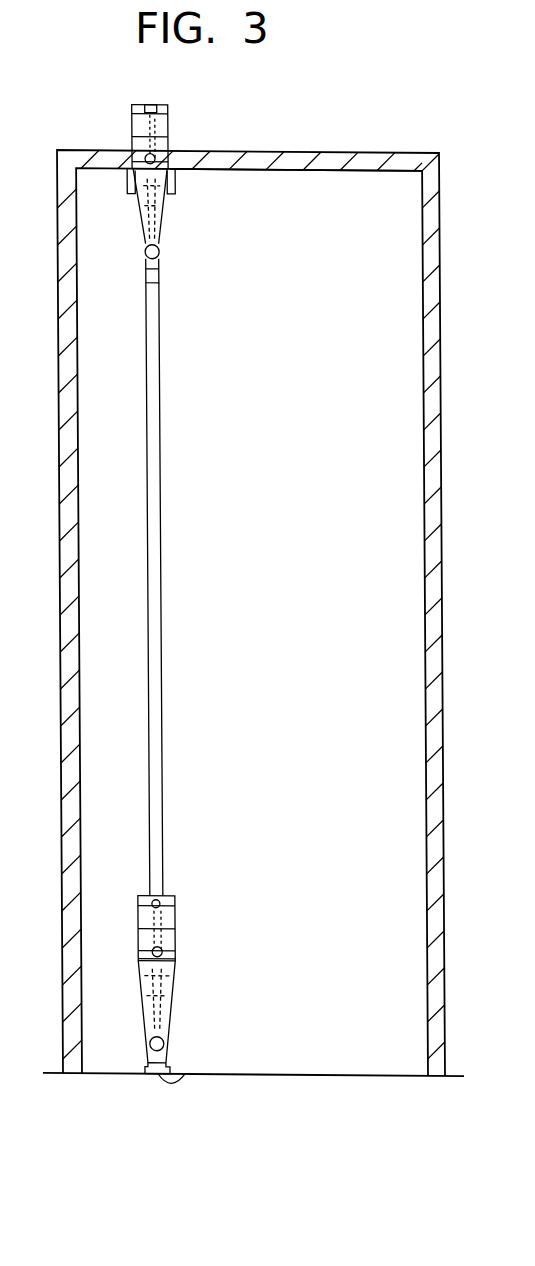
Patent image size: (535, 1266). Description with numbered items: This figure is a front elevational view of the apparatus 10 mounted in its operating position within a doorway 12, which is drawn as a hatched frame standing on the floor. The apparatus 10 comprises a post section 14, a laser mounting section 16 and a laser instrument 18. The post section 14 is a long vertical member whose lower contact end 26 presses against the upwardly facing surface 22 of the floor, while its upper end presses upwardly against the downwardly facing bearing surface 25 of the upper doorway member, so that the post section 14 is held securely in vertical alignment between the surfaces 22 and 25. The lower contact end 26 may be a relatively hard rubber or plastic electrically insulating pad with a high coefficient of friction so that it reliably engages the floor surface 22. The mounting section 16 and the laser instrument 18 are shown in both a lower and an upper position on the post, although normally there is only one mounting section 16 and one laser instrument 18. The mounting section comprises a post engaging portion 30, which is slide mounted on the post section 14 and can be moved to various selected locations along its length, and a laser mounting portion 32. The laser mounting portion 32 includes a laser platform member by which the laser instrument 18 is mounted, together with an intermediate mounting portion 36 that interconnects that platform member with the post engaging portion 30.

The apparatus 10 is at (198, 591).
The doorway 12 is at (297, 158).
The post section 14 is at (160, 447).
The laser mounting section 16 is at (172, 225).
The laser instrument 18 is at (160, 126).
The upwardly facing surface of the floor 22 is at (290, 1075).
The downwardly facing bearing surface 25 is at (283, 170).
The lower contact end 26 is at (185, 1074).
The post engaging portion 30 is at (159, 280).
The laser mounting portion 32 is at (175, 897).
The intermediate mounting portion 36 is at (175, 976).